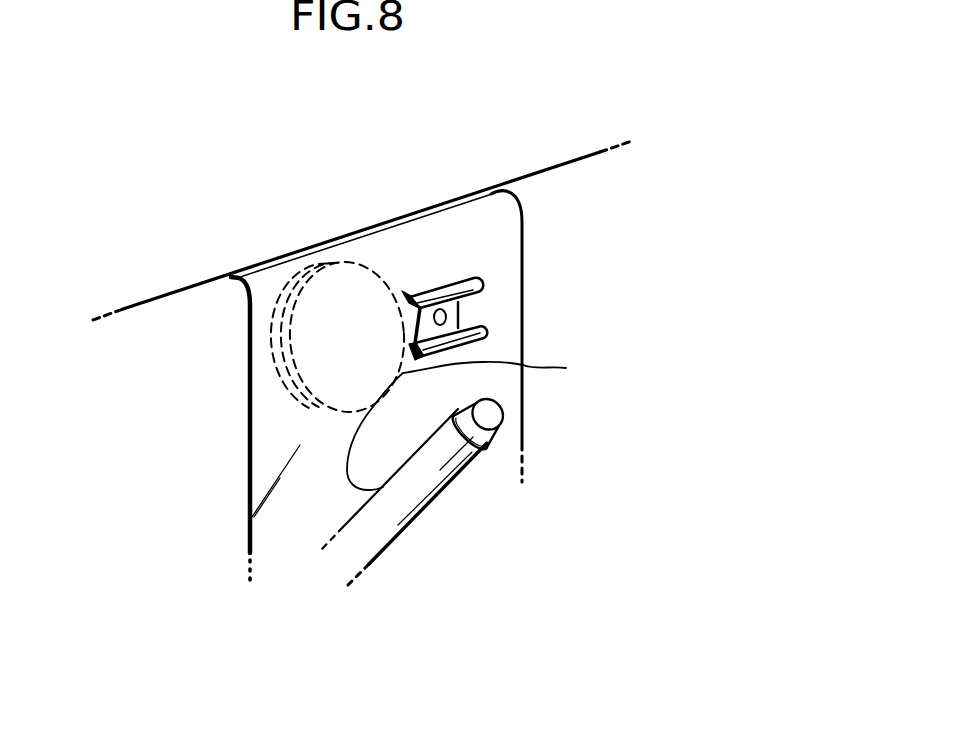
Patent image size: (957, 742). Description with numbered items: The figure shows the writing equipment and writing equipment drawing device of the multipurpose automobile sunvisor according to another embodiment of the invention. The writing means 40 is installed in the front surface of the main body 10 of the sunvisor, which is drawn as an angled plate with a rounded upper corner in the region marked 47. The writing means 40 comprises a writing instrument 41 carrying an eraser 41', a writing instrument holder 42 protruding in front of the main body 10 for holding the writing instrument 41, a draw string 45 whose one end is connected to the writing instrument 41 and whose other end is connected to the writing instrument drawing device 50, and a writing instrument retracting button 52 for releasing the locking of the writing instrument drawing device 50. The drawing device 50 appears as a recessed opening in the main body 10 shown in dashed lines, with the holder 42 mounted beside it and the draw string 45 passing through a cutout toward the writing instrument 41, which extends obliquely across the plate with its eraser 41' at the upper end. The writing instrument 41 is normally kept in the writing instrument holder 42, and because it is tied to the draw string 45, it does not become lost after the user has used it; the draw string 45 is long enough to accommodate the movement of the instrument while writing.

The main body 10 is at (148, 282).
The side plate 47 is at (477, 228).
The writing instrument drawing device 50 is at (280, 272).
The writing instrument holder 42 is at (445, 281).
The writing instrument retracting button 52 is at (458, 315).
The draw string 45 is at (471, 423).
The writing means 40 is at (472, 496).
The writing instrument 41 is at (400, 497).
The eraser 41' is at (535, 426).